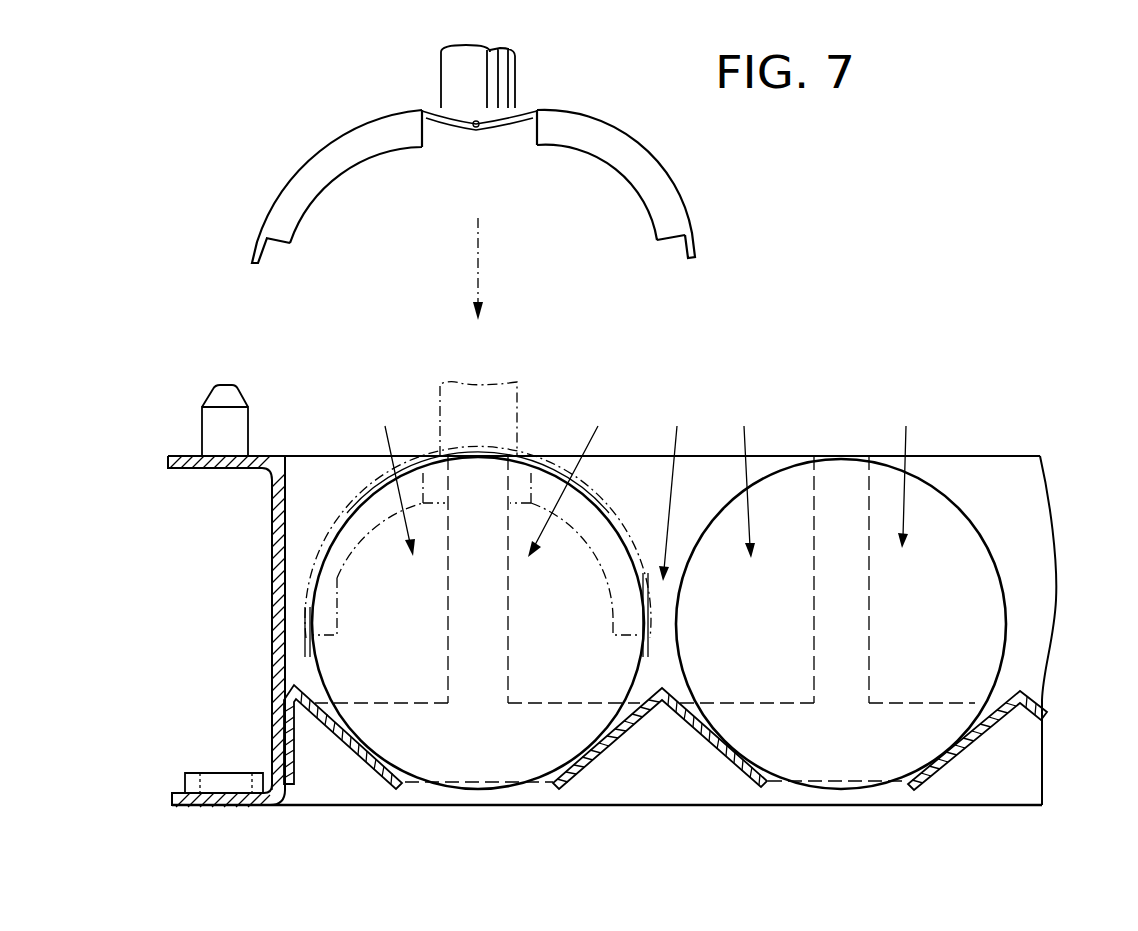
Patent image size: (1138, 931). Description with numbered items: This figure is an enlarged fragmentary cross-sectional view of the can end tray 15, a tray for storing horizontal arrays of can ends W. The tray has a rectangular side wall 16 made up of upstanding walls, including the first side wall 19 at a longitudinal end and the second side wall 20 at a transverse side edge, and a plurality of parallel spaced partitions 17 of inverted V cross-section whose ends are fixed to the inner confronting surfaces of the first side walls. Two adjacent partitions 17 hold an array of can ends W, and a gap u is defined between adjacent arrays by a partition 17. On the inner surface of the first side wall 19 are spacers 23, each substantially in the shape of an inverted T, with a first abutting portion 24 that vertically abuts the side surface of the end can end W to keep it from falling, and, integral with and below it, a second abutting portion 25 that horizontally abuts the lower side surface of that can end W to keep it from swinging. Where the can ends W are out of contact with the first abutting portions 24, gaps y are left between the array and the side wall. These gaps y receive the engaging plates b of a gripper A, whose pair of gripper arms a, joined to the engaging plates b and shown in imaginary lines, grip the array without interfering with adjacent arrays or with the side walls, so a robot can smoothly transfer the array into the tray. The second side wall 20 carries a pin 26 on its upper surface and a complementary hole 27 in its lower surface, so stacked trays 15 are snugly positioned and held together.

The can end tray 15 is at (192, 597).
The side wall 16 is at (272, 622).
The partition 17 is at (362, 757).
The side wall 19 is at (985, 468).
The side wall 20 is at (272, 684).
The spacer 23 is at (481, 496).
The first abutting portion 24 is at (482, 625).
The second abutting portion 25 is at (391, 733).
The pin 26 is at (226, 398).
The hole 27 is at (228, 806).
The gripper A is at (528, 86).
The gripper arm a is at (287, 167).
The engaging plate b is at (318, 175).
The can end W is at (513, 752).
The gap y is at (645, 477).
The gap u is at (673, 488).